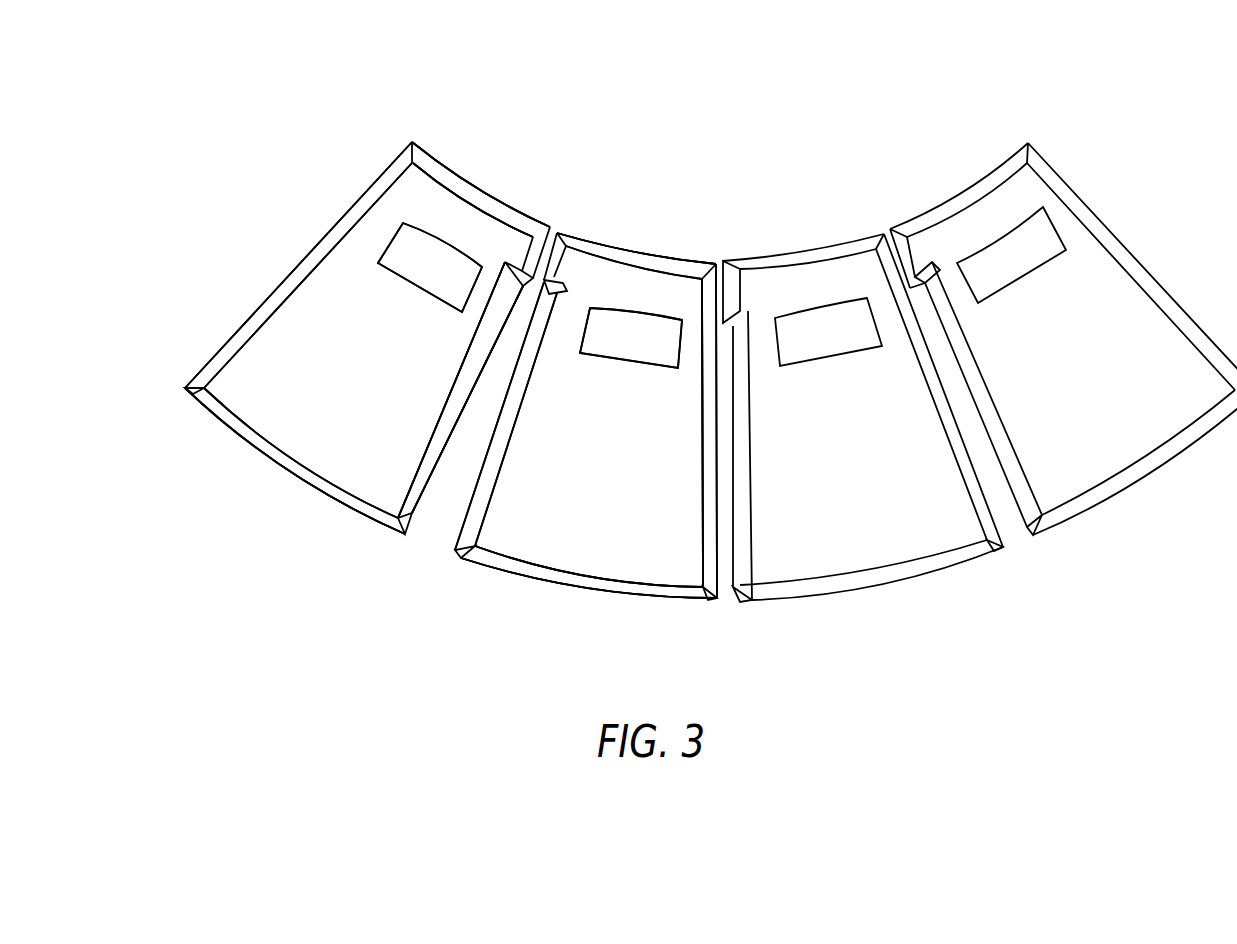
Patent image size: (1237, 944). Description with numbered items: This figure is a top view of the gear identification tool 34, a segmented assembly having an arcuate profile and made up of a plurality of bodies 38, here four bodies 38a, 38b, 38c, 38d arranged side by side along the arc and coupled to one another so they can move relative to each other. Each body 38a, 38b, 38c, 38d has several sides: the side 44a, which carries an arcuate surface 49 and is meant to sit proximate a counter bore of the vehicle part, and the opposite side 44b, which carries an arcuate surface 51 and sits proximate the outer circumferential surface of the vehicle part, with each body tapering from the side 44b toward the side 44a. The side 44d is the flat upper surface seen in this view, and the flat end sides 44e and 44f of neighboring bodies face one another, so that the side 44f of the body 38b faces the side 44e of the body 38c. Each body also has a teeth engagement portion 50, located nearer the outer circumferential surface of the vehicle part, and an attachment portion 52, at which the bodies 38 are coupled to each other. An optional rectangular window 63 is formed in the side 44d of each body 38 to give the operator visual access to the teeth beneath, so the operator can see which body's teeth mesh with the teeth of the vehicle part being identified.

The gear identification tool 34 is at (691, 113).
The bodies 38 is at (582, 623).
The body 38a is at (490, 163).
The body 38b is at (672, 248).
The body 38c is at (872, 598).
The body 38d is at (948, 184).
The side 44a is at (520, 214).
The side 44b is at (278, 470).
The side 44d is at (392, 452).
The side 44e is at (418, 512).
The side 44f is at (305, 250).
The arcuate surface 49 is at (425, 152).
The teeth engagement portion 50 is at (268, 398).
The arcuate surface 51 is at (303, 483).
The attachment portion 52 is at (440, 177).
The window 63 is at (415, 250).